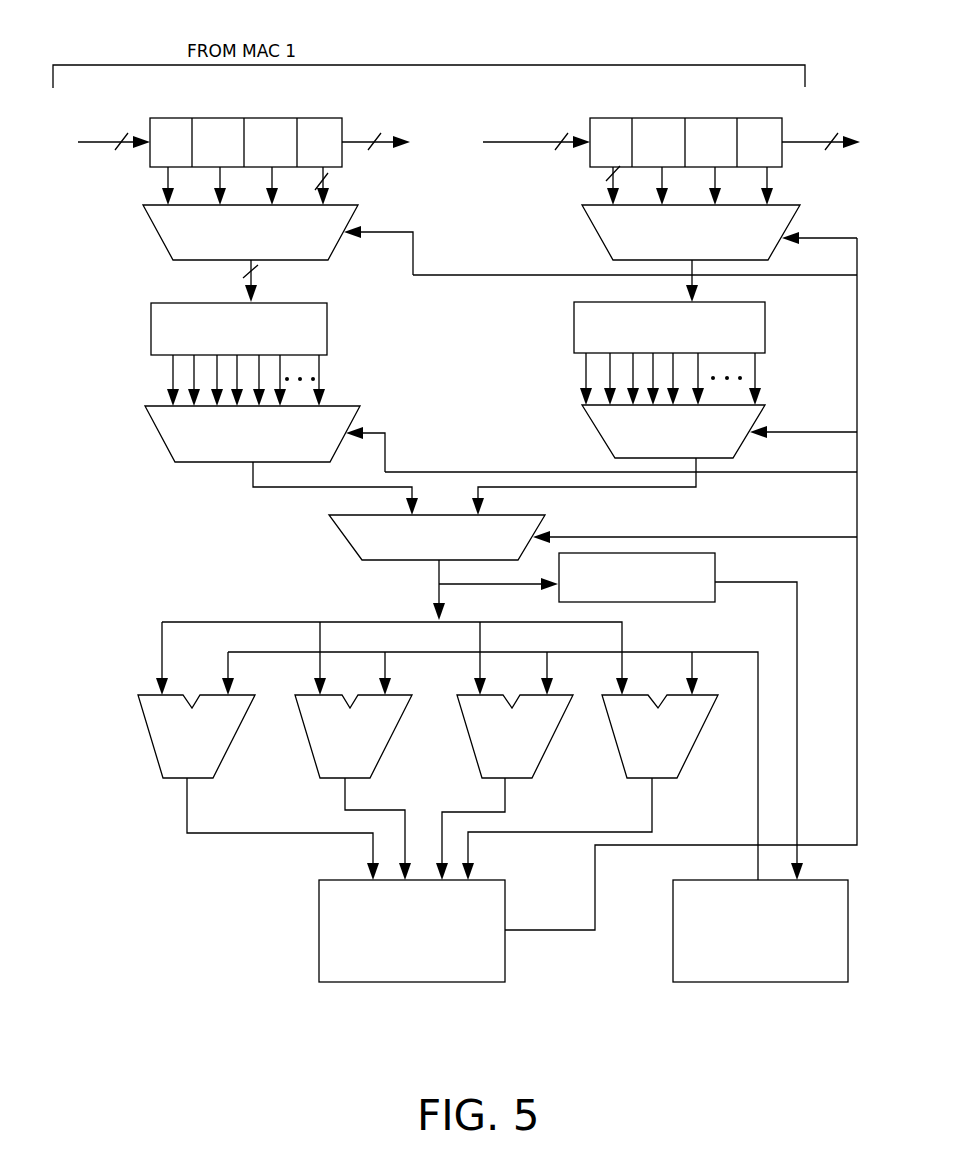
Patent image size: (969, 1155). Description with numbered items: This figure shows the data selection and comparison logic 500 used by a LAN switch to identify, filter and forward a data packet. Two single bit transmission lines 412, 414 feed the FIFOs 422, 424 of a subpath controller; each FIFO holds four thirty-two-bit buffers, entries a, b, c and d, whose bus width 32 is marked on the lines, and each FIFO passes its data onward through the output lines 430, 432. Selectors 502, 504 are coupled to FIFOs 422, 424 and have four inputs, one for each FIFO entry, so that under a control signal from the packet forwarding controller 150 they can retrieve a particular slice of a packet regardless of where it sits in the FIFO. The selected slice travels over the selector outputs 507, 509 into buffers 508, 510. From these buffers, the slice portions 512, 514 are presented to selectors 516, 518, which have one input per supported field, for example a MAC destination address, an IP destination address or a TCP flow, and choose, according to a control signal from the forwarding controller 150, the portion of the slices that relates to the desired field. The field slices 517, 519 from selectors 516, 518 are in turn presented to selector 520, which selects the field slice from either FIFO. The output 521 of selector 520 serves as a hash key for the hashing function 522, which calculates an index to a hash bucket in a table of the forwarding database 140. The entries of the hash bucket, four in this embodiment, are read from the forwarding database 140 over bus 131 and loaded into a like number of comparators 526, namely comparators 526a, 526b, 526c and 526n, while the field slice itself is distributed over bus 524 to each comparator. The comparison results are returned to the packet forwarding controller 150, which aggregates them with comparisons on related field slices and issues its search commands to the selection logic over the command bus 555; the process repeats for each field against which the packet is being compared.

The header parsing circuit 500 is at (627, 1026).
The single bit transmission line 412 is at (91, 141).
The single bit transmission line 414 is at (492, 141).
The FIFO 422 is at (210, 118).
The FIFO 424 is at (652, 118).
The first data output 430 is at (352, 139).
The second data output 432 is at (793, 141).
The 32-bit bus width 32 is at (470, 210).
The selector 502 is at (268, 240).
The selector 504 is at (710, 240).
The first multiplexer output 507 is at (258, 279).
The second multiplexer output 509 is at (694, 277).
The buffer 508 is at (253, 337).
The buffer 510 is at (686, 336).
The first register output lines 512 is at (172, 372).
The second register output lines 514 is at (583, 377).
The selector 516 is at (270, 437).
The selector 518 is at (698, 435).
The third multiplexer output 517 is at (253, 483).
The fourth multiplexer output 519 is at (605, 488).
The selector 520 is at (456, 548).
The multiplexer output line 521 is at (472, 583).
The hashing function 522 is at (705, 595).
The data bus 524 is at (242, 622).
The bus 131 is at (663, 652).
The comparators 526 is at (143, 722).
The comparator 526a is at (213, 743).
The comparator 526b is at (373, 743).
The comparator 526c is at (535, 743).
The comparator 526n is at (681, 743).
The packet forwarding controller 150 is at (440, 950).
The forwarding database 140 is at (790, 950).
The command bus 555 is at (858, 553).